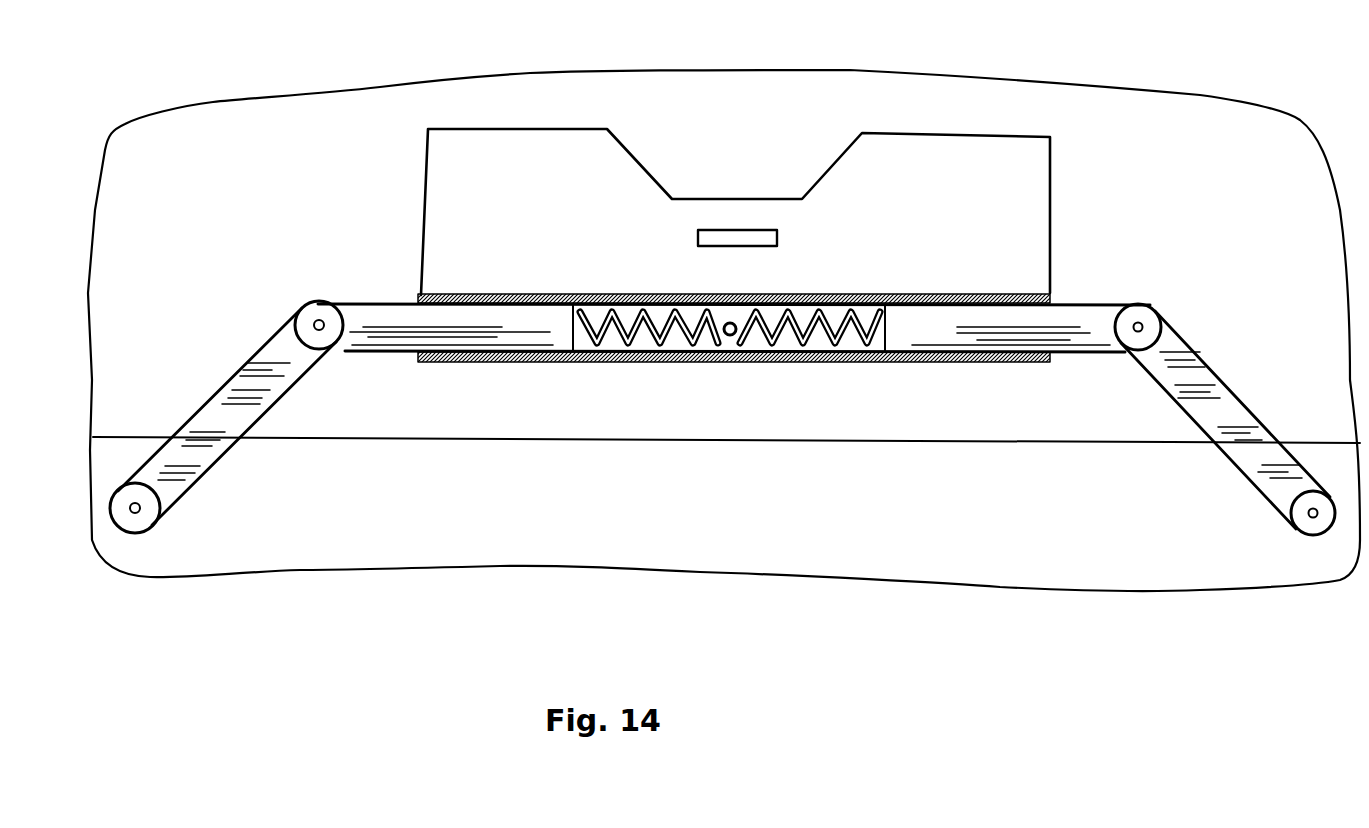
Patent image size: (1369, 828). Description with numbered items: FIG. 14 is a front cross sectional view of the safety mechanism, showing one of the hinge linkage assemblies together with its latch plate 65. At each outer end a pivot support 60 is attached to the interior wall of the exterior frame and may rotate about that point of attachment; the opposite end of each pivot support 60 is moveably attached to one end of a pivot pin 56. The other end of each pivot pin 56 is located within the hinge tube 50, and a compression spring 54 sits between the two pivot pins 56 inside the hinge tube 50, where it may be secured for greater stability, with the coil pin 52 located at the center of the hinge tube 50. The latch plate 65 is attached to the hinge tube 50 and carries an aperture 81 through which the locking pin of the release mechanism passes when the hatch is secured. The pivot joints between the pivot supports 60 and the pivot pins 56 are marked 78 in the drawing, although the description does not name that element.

The hinge tube 50 is at (508, 362).
The coil pin 52 is at (733, 337).
The compression spring 54 is at (638, 362).
The pivot pin 56 is at (397, 355).
The pivot support 60 is at (213, 437).
The latch plate 65 is at (1023, 185).
The pivot roller 78 is at (318, 322).
The aperture 81 is at (732, 235).